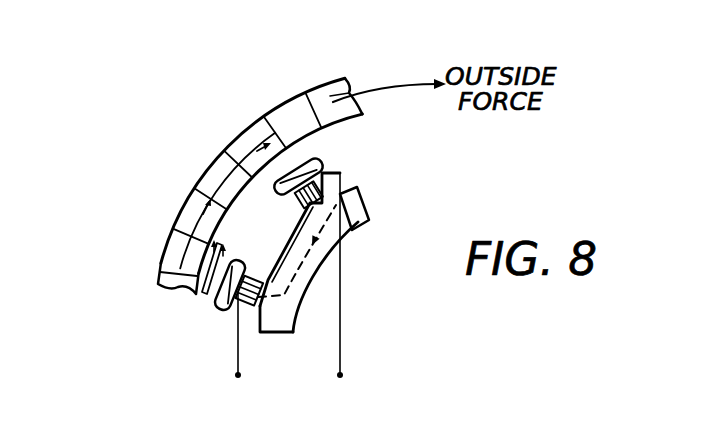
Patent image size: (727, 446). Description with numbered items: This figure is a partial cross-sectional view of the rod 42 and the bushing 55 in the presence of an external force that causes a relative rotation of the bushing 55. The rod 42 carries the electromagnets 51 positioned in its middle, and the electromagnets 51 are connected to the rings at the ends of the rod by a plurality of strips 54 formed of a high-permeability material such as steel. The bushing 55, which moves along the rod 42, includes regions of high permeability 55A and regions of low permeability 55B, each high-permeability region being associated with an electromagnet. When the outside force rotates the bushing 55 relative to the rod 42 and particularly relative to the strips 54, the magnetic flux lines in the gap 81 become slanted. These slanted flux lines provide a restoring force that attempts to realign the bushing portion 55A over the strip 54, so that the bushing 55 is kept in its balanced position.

The rod 42 is at (362, 267).
The electromagnet 51 is at (366, 230).
The strip 54 is at (312, 168).
The bushing 55 is at (176, 162).
The region of high permeability 55A is at (235, 142).
The region of low permeability 55B is at (333, 90).
The gap 81 is at (209, 288).